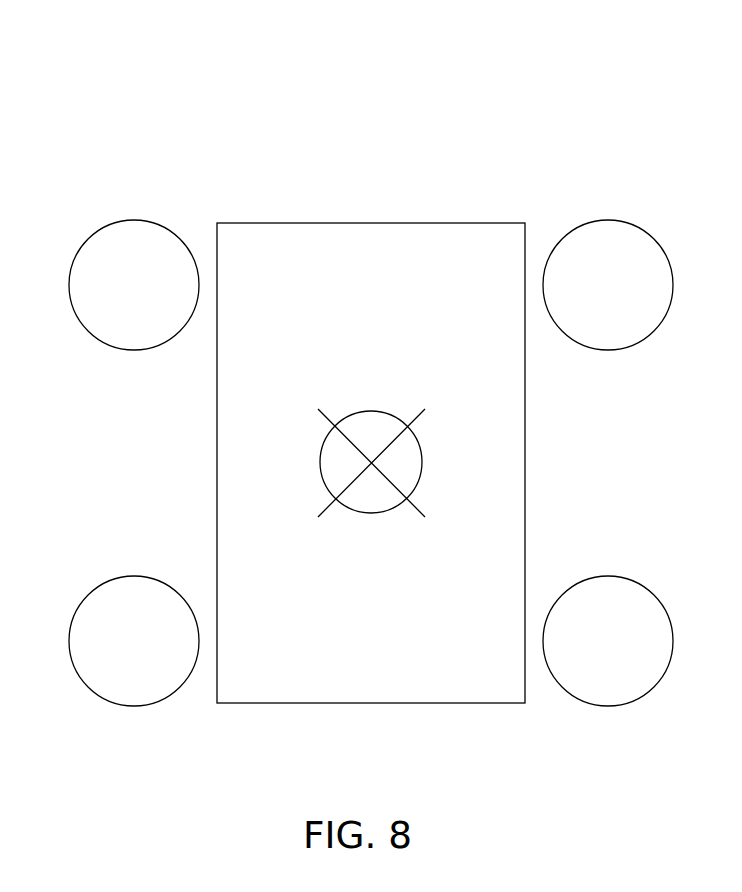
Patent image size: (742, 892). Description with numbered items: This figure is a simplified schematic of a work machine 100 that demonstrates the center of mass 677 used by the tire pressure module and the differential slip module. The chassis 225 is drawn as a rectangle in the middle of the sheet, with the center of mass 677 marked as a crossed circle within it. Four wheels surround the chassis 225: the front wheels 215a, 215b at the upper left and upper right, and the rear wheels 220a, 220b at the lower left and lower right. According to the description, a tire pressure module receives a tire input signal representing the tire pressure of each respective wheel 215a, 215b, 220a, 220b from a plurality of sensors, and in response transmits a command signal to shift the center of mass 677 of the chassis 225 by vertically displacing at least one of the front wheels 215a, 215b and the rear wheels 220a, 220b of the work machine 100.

The work machine 100 is at (510, 78).
The chassis 225 is at (395, 278).
The center of mass 677 is at (366, 432).
The front wheel 215a is at (167, 298).
The front wheel 215b is at (575, 297).
The rear wheel 220a is at (102, 651).
The rear wheel 220b is at (576, 651).